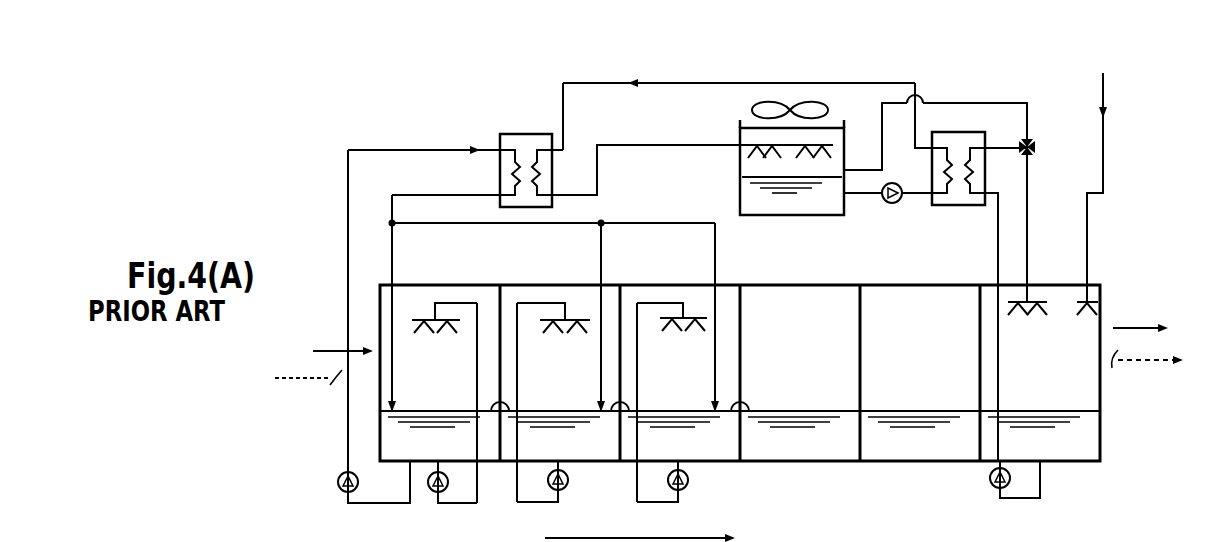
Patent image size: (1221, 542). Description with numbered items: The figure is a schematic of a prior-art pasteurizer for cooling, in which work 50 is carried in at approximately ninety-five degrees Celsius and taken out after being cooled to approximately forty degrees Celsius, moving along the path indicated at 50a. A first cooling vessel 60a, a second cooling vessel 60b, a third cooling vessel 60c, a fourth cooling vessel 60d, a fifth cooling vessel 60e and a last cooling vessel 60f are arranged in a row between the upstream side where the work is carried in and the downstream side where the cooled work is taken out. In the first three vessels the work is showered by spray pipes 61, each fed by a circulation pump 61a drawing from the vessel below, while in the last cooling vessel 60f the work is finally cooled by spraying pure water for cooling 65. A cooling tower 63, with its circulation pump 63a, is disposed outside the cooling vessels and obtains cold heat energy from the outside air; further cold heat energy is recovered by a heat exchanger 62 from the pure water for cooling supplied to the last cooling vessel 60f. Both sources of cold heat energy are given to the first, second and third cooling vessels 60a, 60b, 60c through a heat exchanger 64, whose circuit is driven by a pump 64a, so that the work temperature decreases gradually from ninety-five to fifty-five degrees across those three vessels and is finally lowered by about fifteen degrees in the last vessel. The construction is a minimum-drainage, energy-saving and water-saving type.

The work 50 is at (320, 335).
The work transport path 50a is at (320, 381).
The first cooling vessel 60a is at (423, 285).
The second cooling vessel 60b is at (543, 285).
The third cooling vessel 60c is at (656, 285).
The fourth cooling vessel 60d is at (783, 285).
The fifth cooling vessel 60e is at (903, 285).
The last cooling vessel 60f is at (1093, 285).
The spray pipe 61 is at (477, 360).
The circulation pump 61a is at (440, 494).
The heat exchanger 62 is at (940, 133).
The cooling tower 63 is at (795, 132).
The cooling water pump 63a is at (887, 205).
The heat exchanger 64 is at (540, 127).
The pump 64a is at (338, 490).
The pure water for cooling 65 is at (1149, 194).